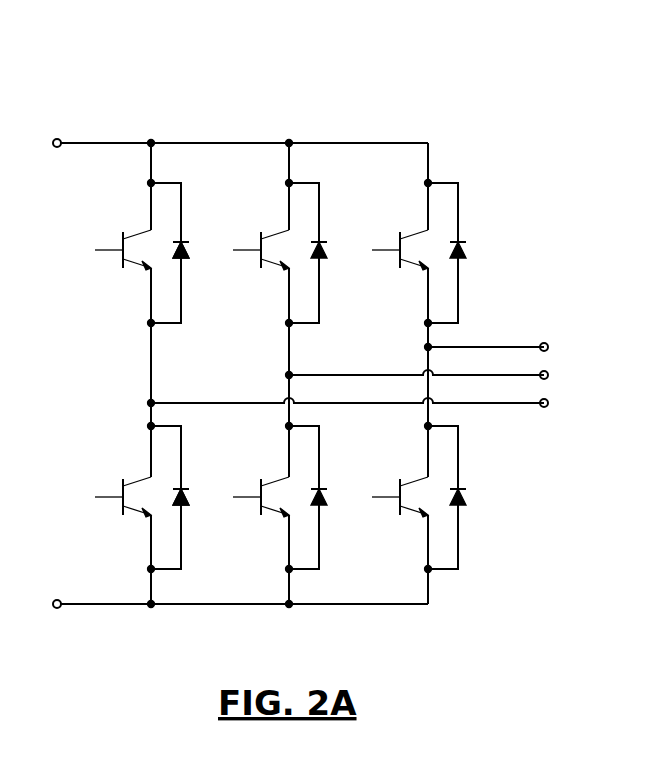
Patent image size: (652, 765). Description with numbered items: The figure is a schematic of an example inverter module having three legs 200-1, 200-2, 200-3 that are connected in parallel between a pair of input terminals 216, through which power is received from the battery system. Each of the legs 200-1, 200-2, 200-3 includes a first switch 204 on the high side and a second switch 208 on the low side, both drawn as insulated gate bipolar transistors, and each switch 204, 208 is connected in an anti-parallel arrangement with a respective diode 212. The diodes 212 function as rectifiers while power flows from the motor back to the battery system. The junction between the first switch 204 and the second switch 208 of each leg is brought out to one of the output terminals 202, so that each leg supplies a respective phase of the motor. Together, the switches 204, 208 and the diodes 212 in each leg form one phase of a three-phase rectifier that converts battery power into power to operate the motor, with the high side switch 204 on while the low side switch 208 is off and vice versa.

The leg 200-1 is at (113, 308).
The leg 200-2 is at (289, 107).
The leg 200-3 is at (428, 107).
The output terminals 202 is at (570, 342).
The first switch 204 is at (107, 278).
The second switch 208 is at (102, 470).
The diode 212 is at (190, 246).
The input terminals 216 is at (57, 148).